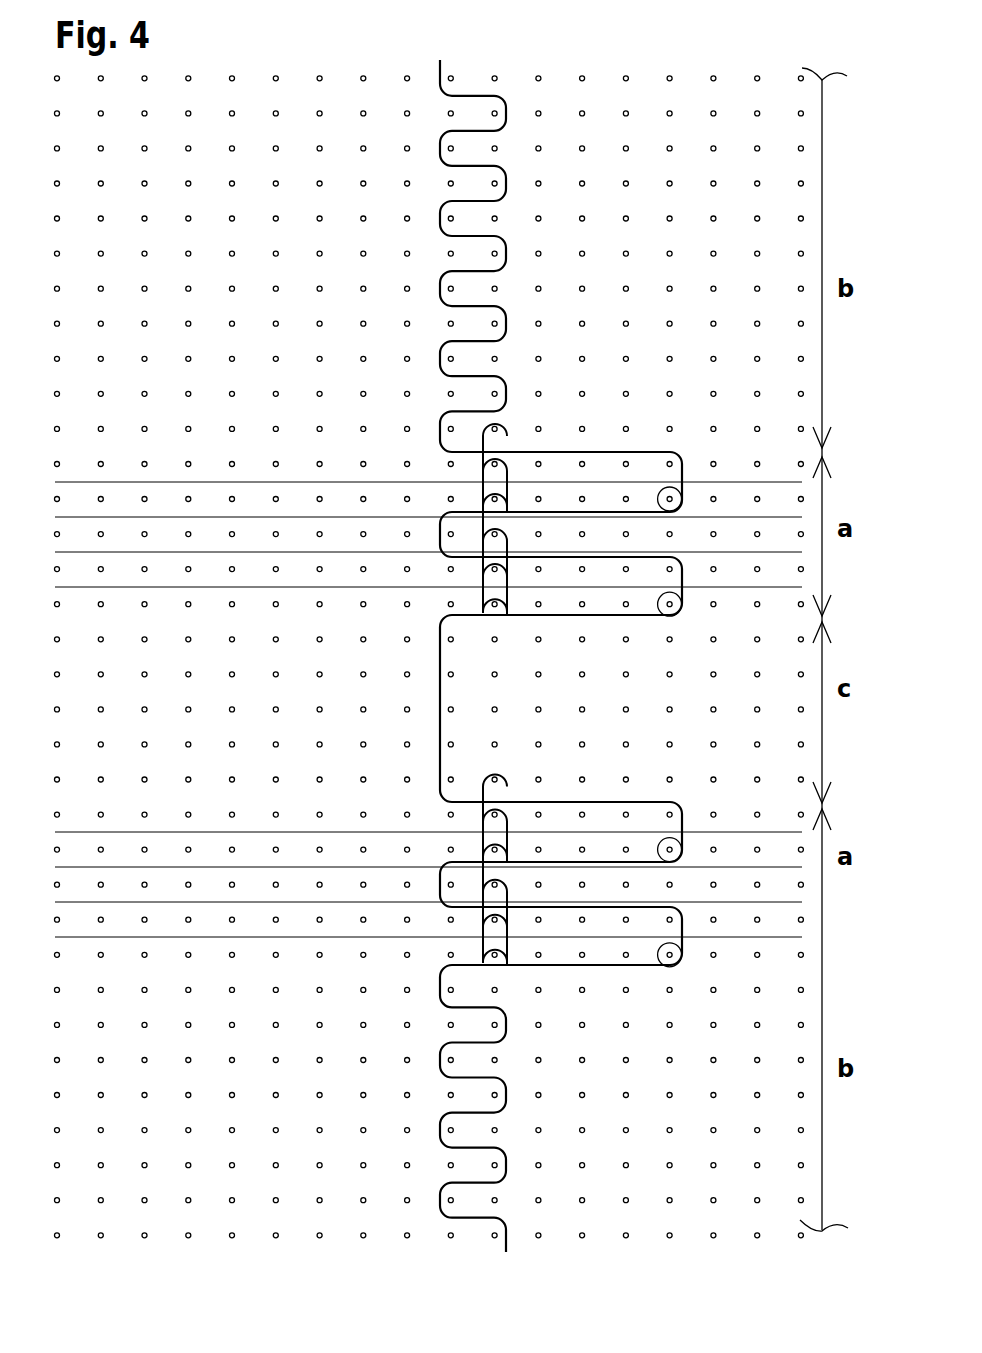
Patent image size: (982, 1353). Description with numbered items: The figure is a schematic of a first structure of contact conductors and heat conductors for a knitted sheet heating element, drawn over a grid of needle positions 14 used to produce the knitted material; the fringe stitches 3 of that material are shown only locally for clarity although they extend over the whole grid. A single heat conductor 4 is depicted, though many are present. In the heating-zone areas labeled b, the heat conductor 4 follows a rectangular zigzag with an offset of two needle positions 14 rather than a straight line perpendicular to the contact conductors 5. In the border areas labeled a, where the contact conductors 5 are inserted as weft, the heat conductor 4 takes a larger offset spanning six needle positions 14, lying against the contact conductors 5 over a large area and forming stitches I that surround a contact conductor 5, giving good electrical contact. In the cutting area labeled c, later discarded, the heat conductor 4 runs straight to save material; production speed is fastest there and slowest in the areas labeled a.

The needle positions 14 is at (713, 79).
The heat conductor 4 is at (507, 258).
The fringe stitches 3 is at (507, 433).
The contact conductors 5 is at (206, 481).
The stitches I is at (683, 500).